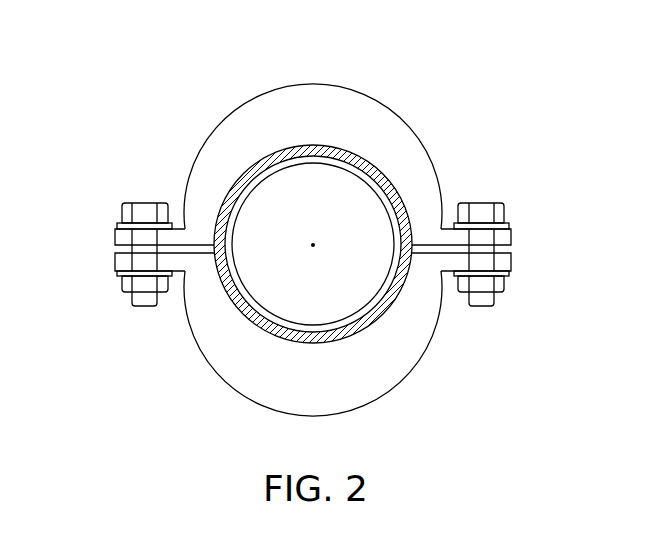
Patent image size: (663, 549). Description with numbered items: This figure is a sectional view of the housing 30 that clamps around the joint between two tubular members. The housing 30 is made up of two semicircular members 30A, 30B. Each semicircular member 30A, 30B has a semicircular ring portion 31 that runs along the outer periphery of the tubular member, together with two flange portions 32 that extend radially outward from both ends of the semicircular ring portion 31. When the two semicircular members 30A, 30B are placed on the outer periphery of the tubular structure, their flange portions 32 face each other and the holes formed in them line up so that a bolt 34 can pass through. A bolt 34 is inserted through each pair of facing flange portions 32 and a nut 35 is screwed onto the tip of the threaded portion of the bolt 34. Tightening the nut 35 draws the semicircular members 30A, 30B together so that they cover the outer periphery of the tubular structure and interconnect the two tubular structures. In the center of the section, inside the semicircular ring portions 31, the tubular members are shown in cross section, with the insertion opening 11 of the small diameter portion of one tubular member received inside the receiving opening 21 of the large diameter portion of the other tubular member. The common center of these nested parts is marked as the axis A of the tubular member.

The housing 30 is at (354, 76).
The semicircular member 30A is at (235, 114).
The semicircular member 30B is at (235, 382).
The semicircular ring portion 31 is at (400, 150).
The flange portion 32 is at (120, 238).
The bolt 34 is at (122, 213).
The nut 35 is at (122, 283).
The insertion opening 11 is at (316, 334).
The receiving opening 21 is at (344, 336).
The axis A is at (321, 247).